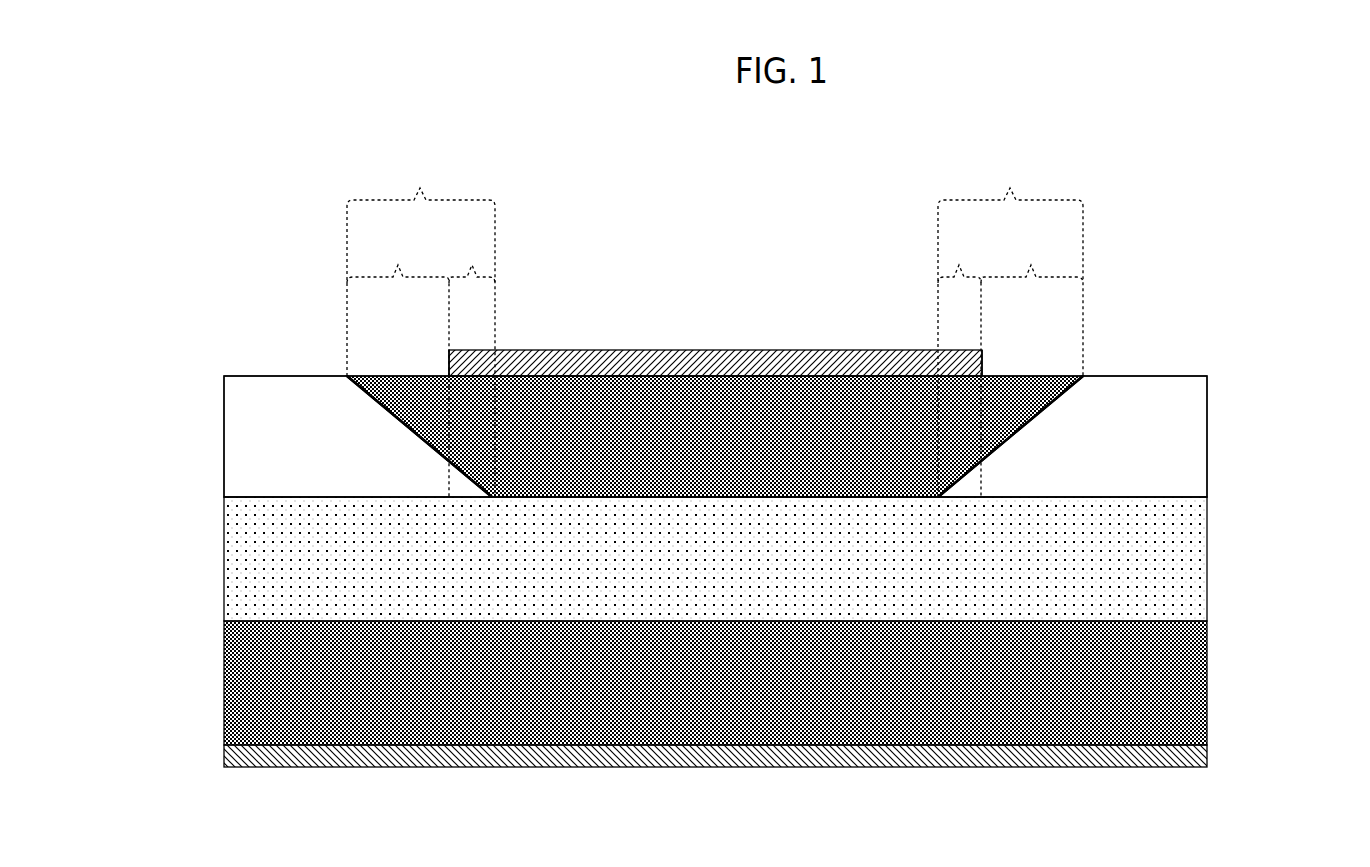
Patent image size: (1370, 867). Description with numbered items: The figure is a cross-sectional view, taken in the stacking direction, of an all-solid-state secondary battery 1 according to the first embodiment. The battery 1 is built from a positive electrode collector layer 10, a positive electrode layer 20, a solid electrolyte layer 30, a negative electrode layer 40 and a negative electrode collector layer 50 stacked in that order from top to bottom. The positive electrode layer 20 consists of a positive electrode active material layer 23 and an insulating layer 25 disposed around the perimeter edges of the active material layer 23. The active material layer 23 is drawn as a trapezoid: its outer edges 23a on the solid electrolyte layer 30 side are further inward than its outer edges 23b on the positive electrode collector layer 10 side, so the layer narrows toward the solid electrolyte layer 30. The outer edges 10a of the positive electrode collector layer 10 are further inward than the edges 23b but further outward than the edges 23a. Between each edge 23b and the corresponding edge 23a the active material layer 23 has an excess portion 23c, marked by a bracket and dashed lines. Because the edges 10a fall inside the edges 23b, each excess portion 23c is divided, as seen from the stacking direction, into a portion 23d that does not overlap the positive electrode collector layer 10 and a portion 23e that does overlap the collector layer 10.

The all-solid-state secondary battery 1 is at (756, 286).
The positive electrode collector layer 10 is at (826, 356).
The outer edges of the positive electrode collector layer 10a is at (447, 362).
The positive electrode layer 20 is at (1288, 316).
The positive electrode active material layer 23 is at (1005, 412).
The outer edges of the positive electrode active material layer on the solid electro 23a is at (492, 497).
The outer edges of the positive electrode active material layer on the positive elec 23b is at (347, 376).
The excess portions 23c is at (715, 321).
The portions that do not overlap with the positive electrode collector layer 23d is at (672, 364).
The portions that overlap with the positive electrode collector layer 23e is at (760, 257).
The insulating layer 25 is at (1177, 443).
The solid electrolyte layer 30 is at (1178, 587).
The negative electrode layer 40 is at (1178, 692).
The negative electrode collector layer 50 is at (1197, 760).